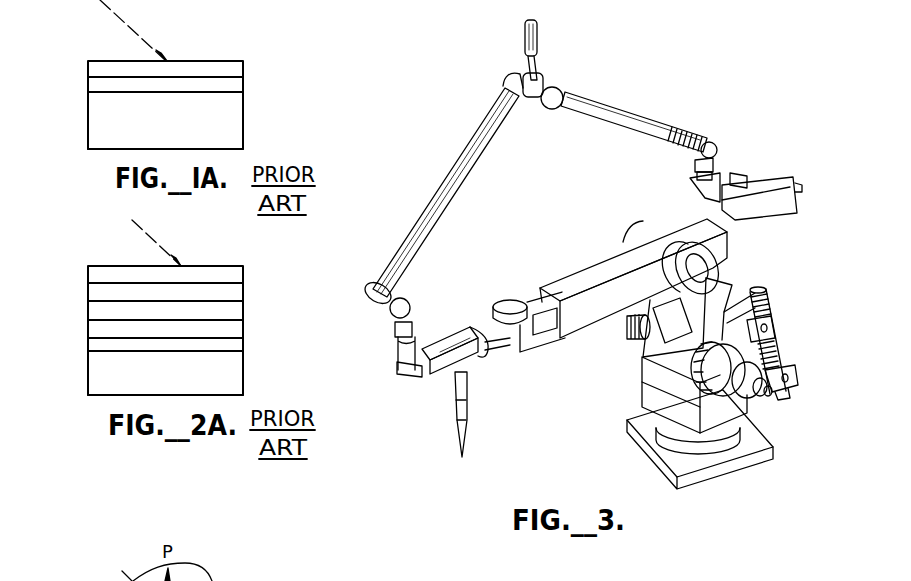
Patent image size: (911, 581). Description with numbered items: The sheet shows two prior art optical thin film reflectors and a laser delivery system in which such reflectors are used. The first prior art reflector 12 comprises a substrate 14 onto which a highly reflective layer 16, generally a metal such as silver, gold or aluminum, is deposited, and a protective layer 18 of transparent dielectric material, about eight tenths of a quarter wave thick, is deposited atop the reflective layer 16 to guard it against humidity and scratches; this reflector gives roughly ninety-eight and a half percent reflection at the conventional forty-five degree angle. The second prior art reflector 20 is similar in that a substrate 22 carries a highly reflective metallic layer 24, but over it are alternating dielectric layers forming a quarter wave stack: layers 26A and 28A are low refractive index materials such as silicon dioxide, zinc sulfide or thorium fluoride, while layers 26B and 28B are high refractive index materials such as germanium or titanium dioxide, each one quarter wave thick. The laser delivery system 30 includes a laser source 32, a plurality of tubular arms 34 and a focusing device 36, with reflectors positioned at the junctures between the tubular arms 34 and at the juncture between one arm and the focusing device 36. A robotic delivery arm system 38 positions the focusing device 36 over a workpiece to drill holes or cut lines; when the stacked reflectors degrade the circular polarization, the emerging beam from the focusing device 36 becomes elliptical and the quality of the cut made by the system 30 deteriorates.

In FIG. 1A, the prior art reflector 12 is at (208, 74).
In FIG. 1A, the substrate 14 is at (88, 121).
In FIG. 1A, the highly reflective layer 16 is at (88, 90).
In FIG. 1A, the protective layer 18 is at (88, 66).
In FIG. 2A, the prior art reflector 20 is at (177, 307).
In FIG. 2A, the substrate 22 is at (88, 366).
In FIG. 2A, the highly reflective metallic layer 24 is at (88, 344).
In FIG. 2A, the low refractive index layer 26A is at (88, 330).
In FIG. 2A, the high refractive index layer 26B is at (88, 311).
In FIG. 2A, the low refractive index layer 28A is at (88, 292).
In FIG. 2A, the high refractive index layer 28B is at (88, 273).
In FIG. 3, the laser delivery system 30 is at (643, 41).
In FIG. 3, the laser source 32 is at (765, 185).
In FIG. 3, the tubular arms 34 is at (617, 128).
In FIG. 3, the focusing device 36 is at (470, 405).
In FIG. 3, the robotic delivery arm system 38 is at (595, 262).